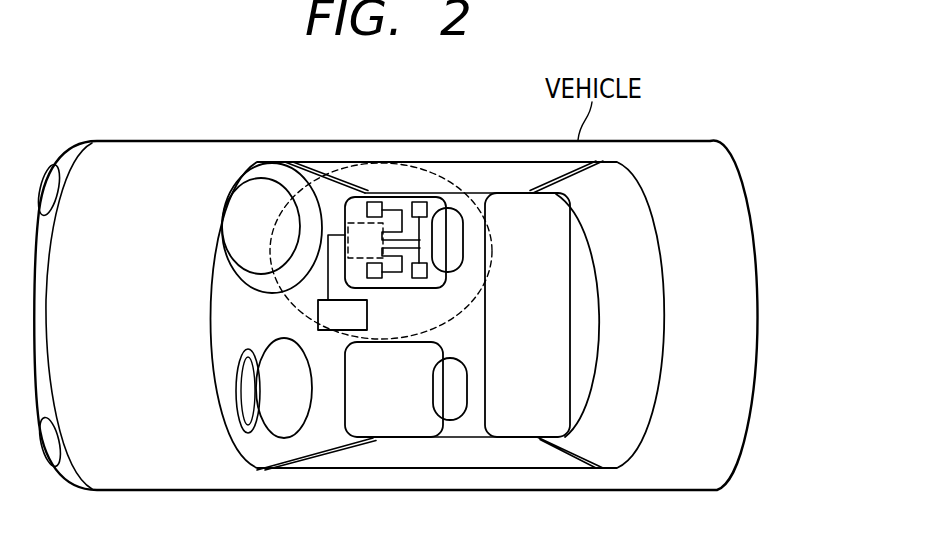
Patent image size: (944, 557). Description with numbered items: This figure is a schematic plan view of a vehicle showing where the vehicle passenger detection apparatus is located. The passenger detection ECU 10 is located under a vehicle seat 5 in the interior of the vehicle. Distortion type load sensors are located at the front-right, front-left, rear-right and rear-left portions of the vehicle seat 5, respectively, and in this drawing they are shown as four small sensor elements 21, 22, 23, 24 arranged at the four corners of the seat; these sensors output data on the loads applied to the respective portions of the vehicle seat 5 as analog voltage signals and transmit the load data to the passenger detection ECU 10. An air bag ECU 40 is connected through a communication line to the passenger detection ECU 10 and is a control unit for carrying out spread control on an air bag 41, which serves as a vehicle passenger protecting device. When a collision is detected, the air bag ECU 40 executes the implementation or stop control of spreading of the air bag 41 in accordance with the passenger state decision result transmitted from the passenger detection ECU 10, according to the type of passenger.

The vehicle seat 5 is at (437, 200).
The passenger detection ECU 10 is at (348, 222).
The load sensor 21 is at (374, 201).
The load sensor 22 is at (418, 201).
The load sensor 23 is at (375, 279).
The load sensor 24 is at (420, 279).
The air bag ECU 40 is at (318, 313).
The air bag 41 is at (252, 193).